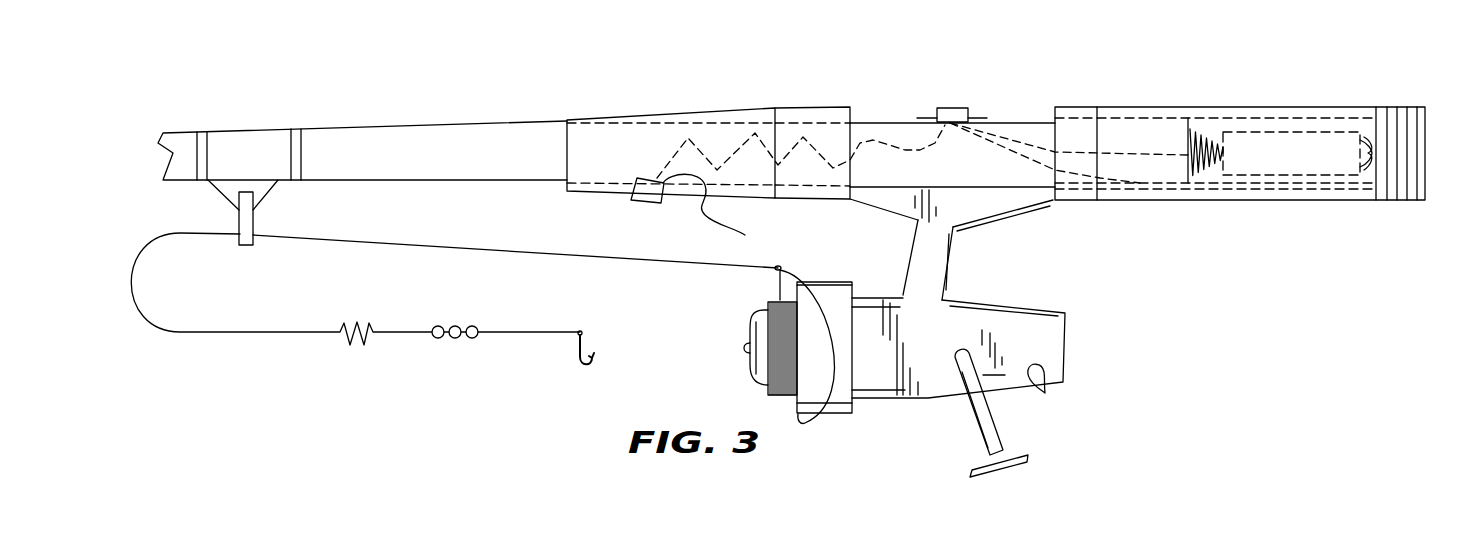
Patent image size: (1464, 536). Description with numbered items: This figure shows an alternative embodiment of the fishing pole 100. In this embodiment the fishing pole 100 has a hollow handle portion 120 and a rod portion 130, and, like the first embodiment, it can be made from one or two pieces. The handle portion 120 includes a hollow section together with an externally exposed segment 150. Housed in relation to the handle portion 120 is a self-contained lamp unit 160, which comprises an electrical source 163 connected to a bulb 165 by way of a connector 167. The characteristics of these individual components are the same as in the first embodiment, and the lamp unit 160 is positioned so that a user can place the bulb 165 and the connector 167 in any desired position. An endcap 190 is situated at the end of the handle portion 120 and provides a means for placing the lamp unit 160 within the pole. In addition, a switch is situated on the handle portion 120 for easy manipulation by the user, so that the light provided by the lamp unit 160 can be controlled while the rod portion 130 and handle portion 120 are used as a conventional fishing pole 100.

The fishing pole 100 is at (1288, 36).
The handle portion 120 is at (1005, 172).
The rod portion 130 is at (408, 183).
The externally exposed segment 150 is at (724, 213).
The lamp unit 160 is at (1282, 188).
The electrical source 163 is at (1333, 158).
The bulb 165 is at (632, 200).
The connector 167 is at (873, 128).
The endcap 190 is at (1426, 150).